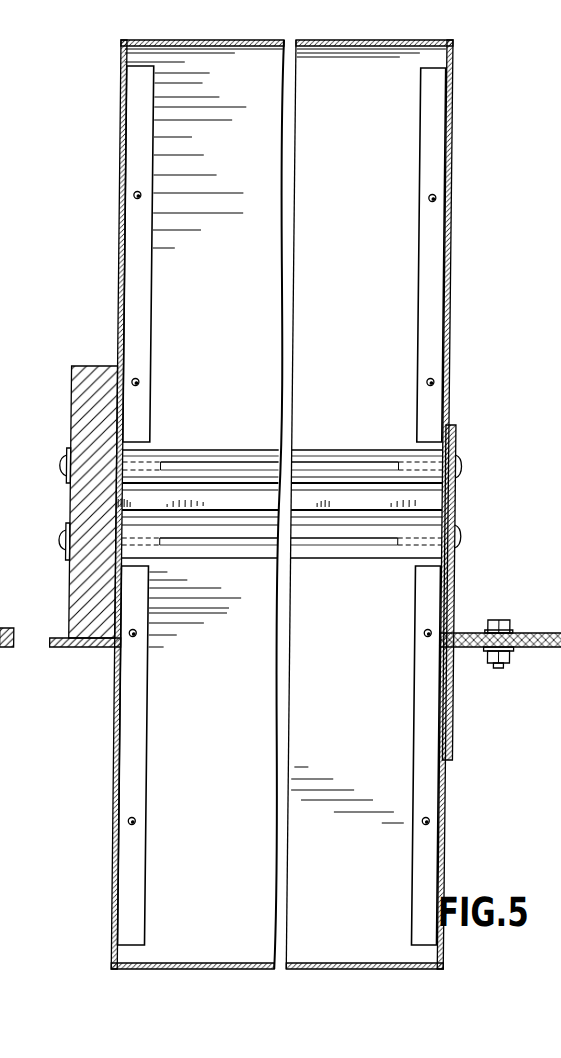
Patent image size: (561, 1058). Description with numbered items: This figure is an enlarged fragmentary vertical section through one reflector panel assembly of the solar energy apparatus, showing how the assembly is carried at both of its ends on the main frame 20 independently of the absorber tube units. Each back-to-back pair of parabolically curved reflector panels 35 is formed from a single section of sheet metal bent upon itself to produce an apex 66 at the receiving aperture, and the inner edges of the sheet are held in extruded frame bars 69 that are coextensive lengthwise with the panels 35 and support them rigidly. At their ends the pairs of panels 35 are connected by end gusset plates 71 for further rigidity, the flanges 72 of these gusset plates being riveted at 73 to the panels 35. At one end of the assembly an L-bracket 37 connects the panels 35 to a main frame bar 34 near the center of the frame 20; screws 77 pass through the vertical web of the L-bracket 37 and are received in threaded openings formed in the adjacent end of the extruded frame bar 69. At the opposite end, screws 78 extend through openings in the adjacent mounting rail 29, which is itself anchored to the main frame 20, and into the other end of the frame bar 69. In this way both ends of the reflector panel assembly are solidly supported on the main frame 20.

The main frame 20 is at (89, 651).
The mounting rail 29 is at (76, 405).
The main frame bar 34 is at (559, 649).
The reflector panel 35 is at (182, 257).
The L-bracket 37 is at (455, 594).
The apex 66 is at (428, 41).
The extruded frame bar 69 is at (249, 458).
The end gusset plate 71 is at (120, 156).
The flange 72 is at (143, 176).
The rivet 73 is at (142, 198).
The screw 77 is at (460, 470).
The screw 78 is at (67, 463).